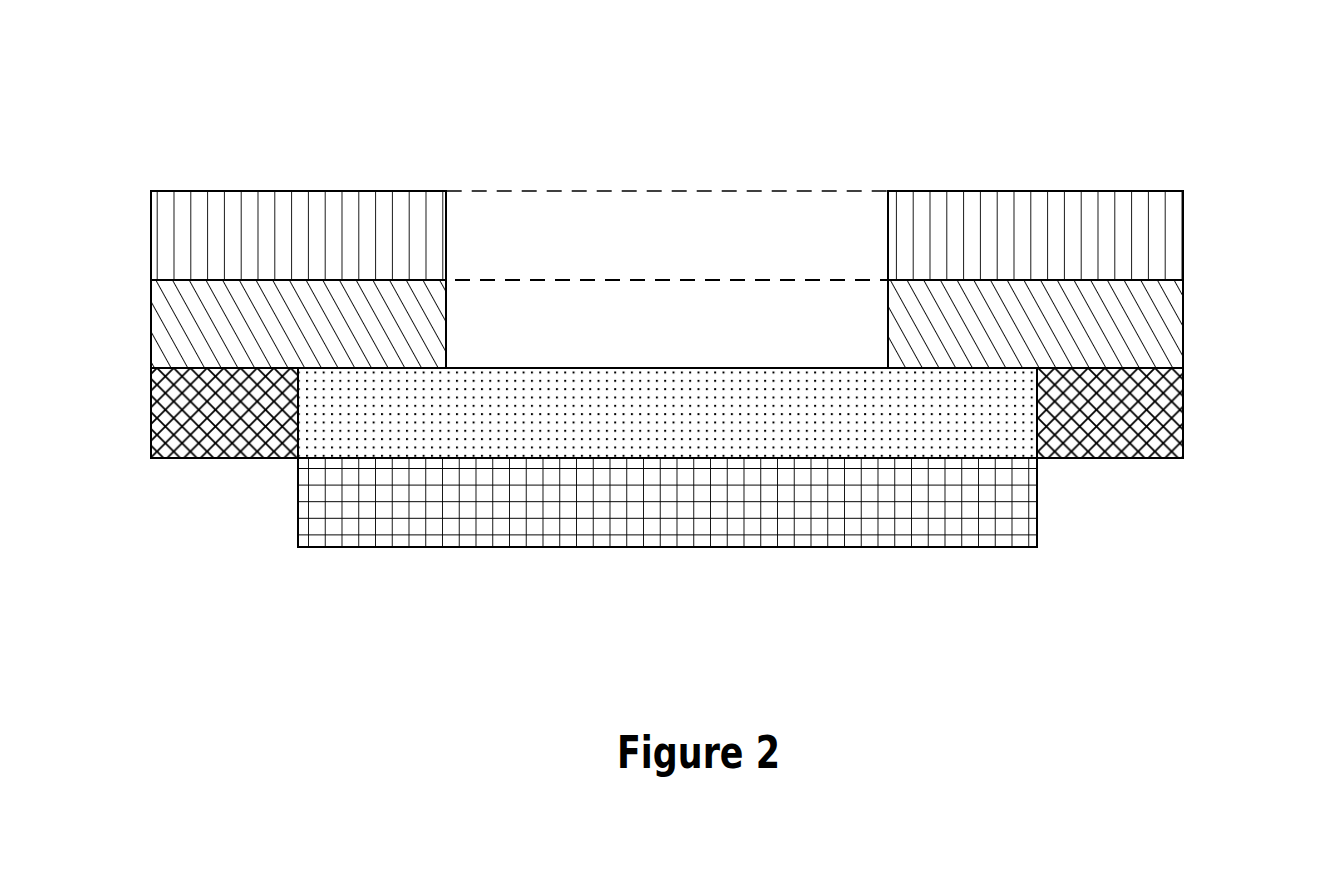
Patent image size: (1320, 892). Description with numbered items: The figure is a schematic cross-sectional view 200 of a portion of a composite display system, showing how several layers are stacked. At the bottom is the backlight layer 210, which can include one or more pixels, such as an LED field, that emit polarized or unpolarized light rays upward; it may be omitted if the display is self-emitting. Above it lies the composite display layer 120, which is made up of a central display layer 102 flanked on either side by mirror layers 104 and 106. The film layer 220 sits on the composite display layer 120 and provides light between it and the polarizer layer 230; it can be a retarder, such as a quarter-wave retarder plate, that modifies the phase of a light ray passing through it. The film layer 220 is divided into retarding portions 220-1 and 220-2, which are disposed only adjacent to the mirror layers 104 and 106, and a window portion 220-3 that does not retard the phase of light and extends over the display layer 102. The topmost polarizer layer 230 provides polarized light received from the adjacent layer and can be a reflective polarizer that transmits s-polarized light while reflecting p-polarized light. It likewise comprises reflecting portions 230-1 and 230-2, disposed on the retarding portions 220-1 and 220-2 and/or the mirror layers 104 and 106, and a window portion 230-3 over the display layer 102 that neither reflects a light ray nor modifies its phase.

The cross-sectional view 200 is at (938, 95).
The polarizer layer 230 is at (105, 197).
The reflecting portion 230-1 is at (150, 236).
The reflecting portion 230-2 is at (1185, 237).
The window portion 230-3 is at (668, 192).
The film layer 220 is at (105, 293).
The retarding portion 220-1 is at (150, 325).
The retarding portion 220-2 is at (1185, 325).
The window portion 220-3 is at (712, 280).
The composite display layer 120 is at (105, 373).
The mirror layer 104 is at (150, 415).
The mirror layer 106 is at (1185, 415).
The display layer 102 is at (712, 368).
The backlight layer 210 is at (1040, 497).